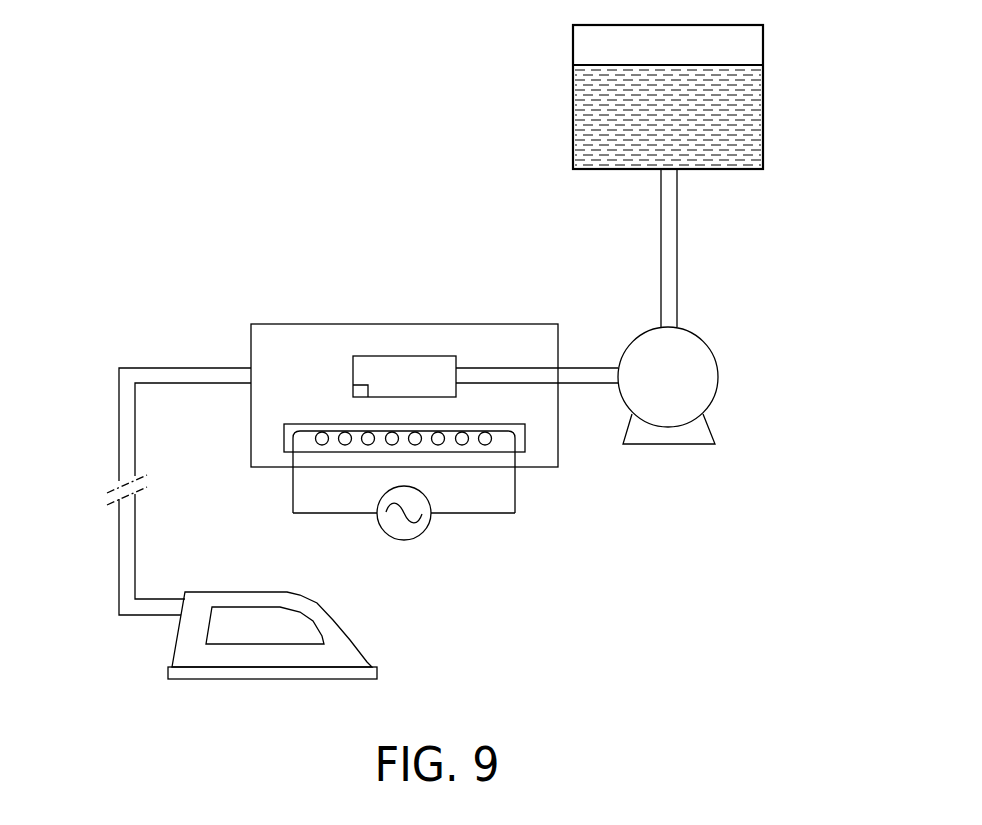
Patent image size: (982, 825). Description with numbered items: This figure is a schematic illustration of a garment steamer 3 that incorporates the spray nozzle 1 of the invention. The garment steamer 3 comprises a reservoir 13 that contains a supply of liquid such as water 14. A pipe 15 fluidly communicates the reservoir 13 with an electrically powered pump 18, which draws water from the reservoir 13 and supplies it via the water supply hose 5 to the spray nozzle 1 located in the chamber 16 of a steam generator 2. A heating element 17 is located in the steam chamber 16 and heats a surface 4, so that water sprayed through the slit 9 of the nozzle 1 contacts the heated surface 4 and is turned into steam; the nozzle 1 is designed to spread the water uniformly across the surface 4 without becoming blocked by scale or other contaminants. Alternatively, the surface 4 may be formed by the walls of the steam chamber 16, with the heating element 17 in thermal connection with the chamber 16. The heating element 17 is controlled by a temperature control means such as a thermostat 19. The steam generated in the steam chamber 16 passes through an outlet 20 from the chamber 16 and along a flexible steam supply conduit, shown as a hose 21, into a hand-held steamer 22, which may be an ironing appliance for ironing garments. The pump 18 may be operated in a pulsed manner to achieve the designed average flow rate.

The spray nozzle 1 is at (432, 356).
The steam generator 2 is at (277, 323).
The garment steamer 3 is at (331, 153).
The heated surface 4 is at (525, 438).
The water supply hose 5 is at (572, 366).
The slit 9 is at (356, 388).
The reservoir 13 is at (763, 128).
The water 14 is at (580, 92).
The pipe 15 is at (677, 243).
The steam chamber 16 is at (262, 408).
The heating element 17 is at (345, 446).
The pump 18 is at (718, 380).
The thermostat 19 is at (404, 541).
The outlet 20 is at (247, 372).
The hose 21 is at (118, 425).
The hand-held steamer 22 is at (370, 657).